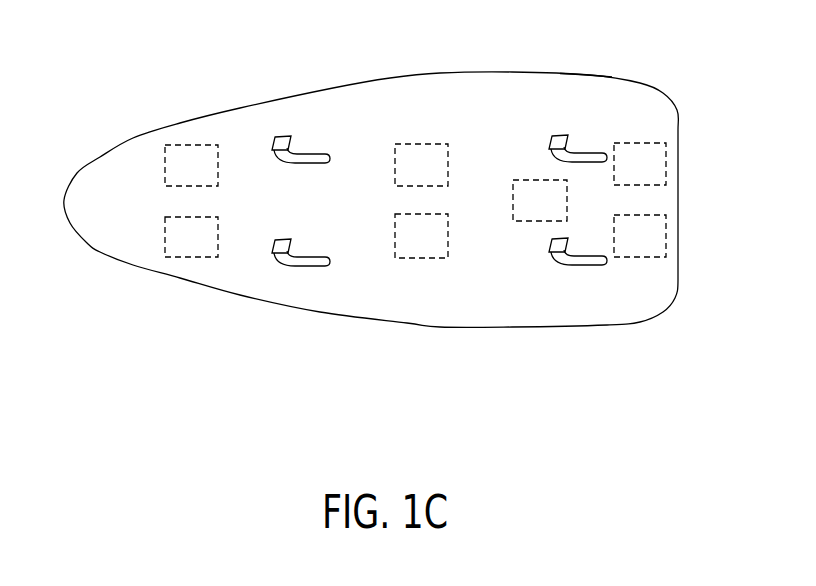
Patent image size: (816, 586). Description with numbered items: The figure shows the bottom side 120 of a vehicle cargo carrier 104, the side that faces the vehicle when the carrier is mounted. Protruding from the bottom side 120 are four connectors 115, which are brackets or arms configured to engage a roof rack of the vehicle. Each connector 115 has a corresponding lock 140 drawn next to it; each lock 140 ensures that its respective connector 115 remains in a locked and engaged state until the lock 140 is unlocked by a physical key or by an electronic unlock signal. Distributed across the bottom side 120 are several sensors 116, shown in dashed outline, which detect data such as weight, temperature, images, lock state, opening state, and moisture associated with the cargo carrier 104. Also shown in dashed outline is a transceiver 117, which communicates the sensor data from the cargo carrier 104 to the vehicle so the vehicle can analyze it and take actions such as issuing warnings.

The cargo carrier 104 is at (586, 75).
The connectors 115 is at (308, 158).
The sensors 116 is at (191, 153).
The transceiver 117 is at (526, 213).
The bottom side 120 is at (92, 190).
The locks 140 is at (283, 137).